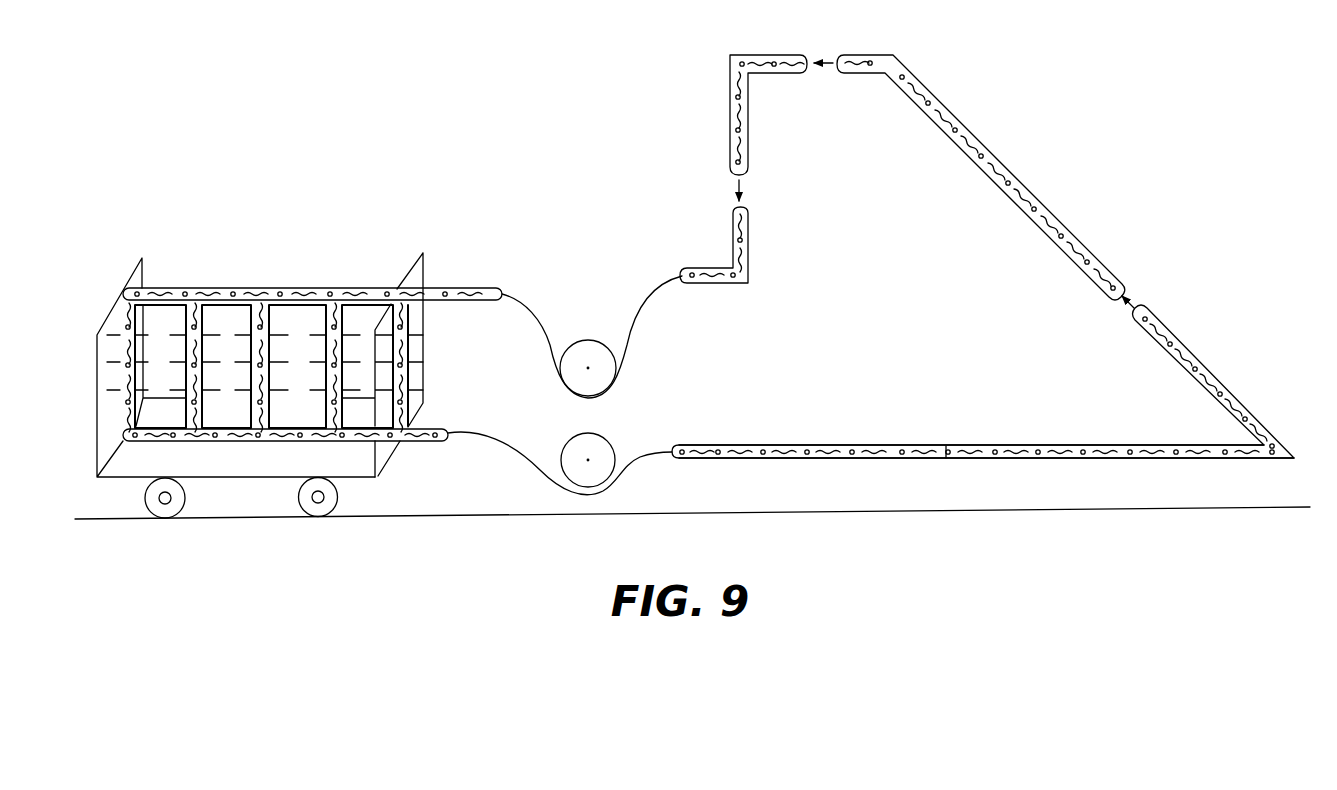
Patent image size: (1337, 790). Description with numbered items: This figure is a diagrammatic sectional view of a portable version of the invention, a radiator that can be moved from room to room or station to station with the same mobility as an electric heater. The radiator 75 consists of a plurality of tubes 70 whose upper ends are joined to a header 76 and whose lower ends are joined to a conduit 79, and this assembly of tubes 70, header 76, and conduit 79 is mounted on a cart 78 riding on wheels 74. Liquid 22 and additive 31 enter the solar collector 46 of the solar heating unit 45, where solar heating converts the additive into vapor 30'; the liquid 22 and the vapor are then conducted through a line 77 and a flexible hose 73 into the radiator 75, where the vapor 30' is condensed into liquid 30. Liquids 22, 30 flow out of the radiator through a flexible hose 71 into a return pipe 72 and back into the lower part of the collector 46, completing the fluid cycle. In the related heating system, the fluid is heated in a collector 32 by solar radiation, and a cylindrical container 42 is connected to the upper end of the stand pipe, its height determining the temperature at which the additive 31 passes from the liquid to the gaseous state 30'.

The liquid 22 is at (303, 294).
The liquid 30 is at (682, 286).
The vapor 30' is at (733, 157).
The additive 31 is at (947, 456).
The collector 32 is at (999, 148).
The cylindrical container 42 is at (175, 332).
The solar heating unit 45 is at (1092, 244).
The solar collector 46 is at (953, 113).
The tube 70 is at (348, 313).
The flexible hose 71 is at (620, 497).
The return pipe 72 is at (842, 460).
The flexible hose 73 is at (645, 292).
The wheels 74 is at (335, 506).
The radiator 75 is at (209, 288).
The header 76 is at (358, 287).
The line 77 is at (728, 129).
The cart 78 is at (384, 453).
The conduit 79 is at (305, 442).